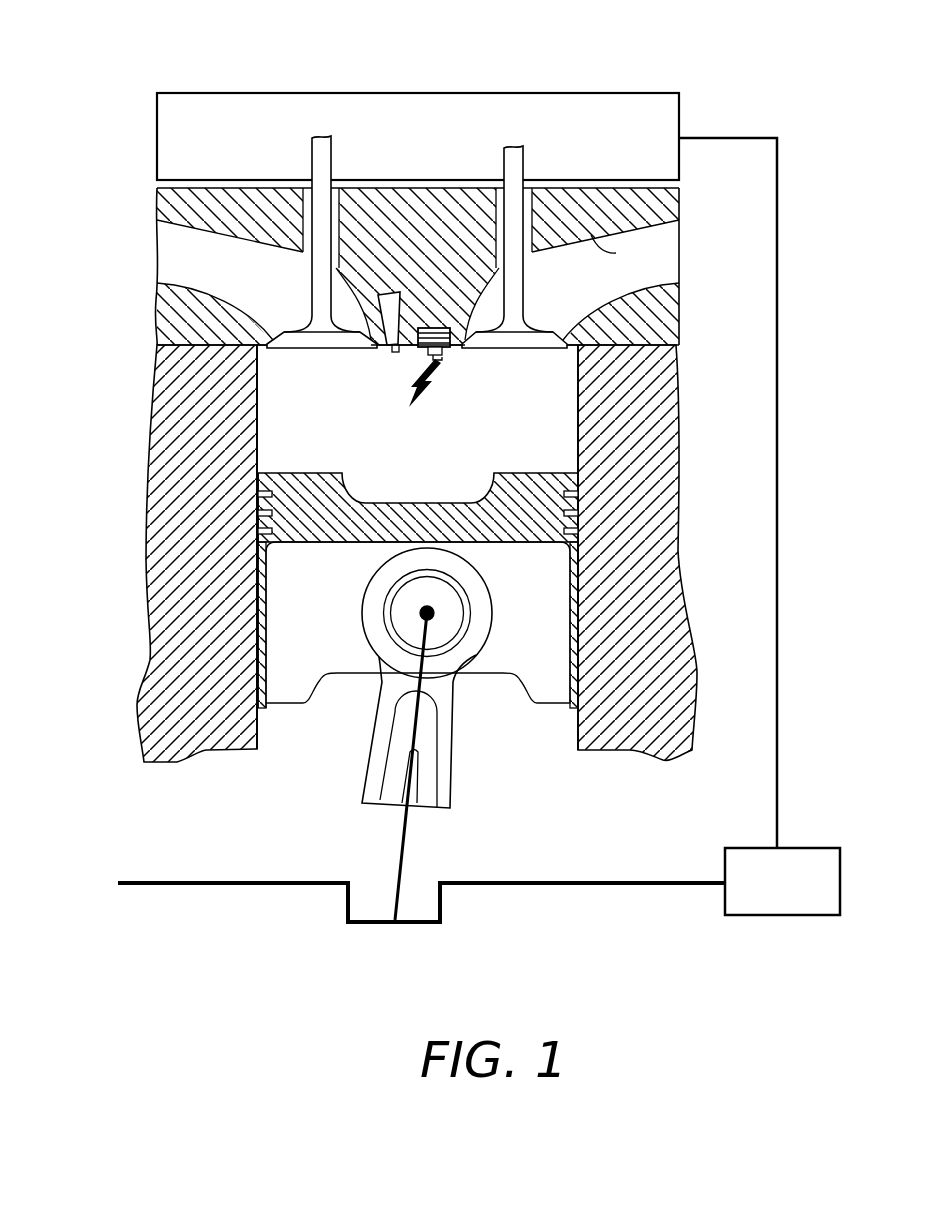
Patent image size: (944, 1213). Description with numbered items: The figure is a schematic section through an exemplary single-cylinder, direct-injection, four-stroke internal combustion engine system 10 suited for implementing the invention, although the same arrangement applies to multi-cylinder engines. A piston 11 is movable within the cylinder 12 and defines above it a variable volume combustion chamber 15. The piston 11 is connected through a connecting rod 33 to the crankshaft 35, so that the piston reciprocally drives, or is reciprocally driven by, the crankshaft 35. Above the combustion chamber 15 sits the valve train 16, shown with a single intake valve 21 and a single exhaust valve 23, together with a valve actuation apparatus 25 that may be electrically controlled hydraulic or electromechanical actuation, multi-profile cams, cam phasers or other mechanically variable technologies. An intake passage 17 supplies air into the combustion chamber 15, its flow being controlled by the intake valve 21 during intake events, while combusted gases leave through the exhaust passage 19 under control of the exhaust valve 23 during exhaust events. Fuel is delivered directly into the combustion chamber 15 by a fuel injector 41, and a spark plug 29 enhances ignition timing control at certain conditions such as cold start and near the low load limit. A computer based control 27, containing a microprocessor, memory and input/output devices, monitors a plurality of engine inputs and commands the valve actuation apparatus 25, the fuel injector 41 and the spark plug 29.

The internal combustion engine system 10 is at (122, 378).
The piston 11 is at (303, 470).
The cylinder 12 is at (562, 440).
The combustion chamber 15 is at (434, 479).
The valve train 16 is at (616, 84).
The intake passage 17 is at (248, 237).
The exhaust passage 19 is at (616, 253).
The intake valve 21 is at (320, 343).
The exhaust valve 23 is at (524, 346).
The valve actuation apparatus 25 is at (436, 152).
The computer based control 27 is at (805, 857).
The spark plug 29 is at (437, 362).
The connecting rod 33 is at (398, 837).
The crankshaft 35 is at (475, 884).
The fuel injector 41 is at (383, 352).